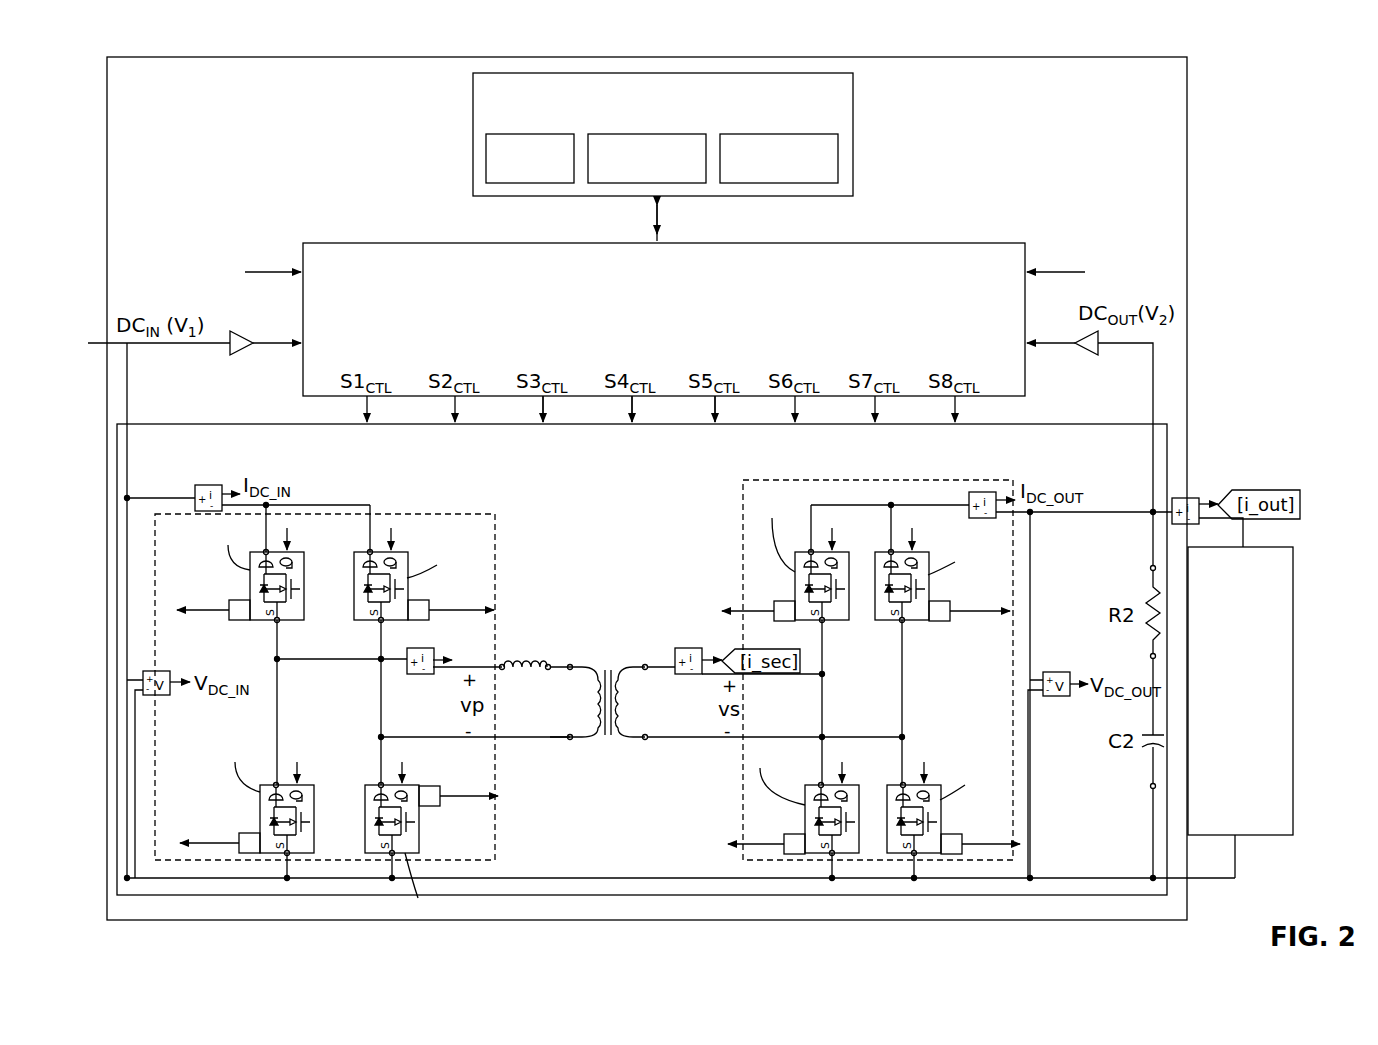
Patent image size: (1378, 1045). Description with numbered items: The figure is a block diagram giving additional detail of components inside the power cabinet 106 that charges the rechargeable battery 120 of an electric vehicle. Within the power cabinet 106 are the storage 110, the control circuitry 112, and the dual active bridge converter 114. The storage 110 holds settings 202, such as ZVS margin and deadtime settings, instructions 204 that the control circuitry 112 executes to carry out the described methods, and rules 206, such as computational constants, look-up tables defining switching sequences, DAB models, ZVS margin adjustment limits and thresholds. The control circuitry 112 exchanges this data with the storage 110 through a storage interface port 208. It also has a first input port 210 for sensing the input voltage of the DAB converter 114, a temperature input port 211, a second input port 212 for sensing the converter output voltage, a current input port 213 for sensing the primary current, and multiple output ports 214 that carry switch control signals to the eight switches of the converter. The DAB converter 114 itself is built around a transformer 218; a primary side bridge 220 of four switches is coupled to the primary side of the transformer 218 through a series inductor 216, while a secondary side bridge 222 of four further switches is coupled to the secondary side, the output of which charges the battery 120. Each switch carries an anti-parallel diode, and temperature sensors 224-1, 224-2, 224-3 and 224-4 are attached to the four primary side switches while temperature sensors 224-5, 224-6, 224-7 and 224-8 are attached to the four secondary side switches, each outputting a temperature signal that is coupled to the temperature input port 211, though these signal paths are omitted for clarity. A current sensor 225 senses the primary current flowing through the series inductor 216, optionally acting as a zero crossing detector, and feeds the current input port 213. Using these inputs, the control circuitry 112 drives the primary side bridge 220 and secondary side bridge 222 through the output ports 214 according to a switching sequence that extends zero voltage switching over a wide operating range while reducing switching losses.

The power cabinet 106 is at (176, 57).
The storage 110 is at (473, 134).
The control circuitry 112 is at (357, 243).
The dual active bridge (DAB) converter 114 is at (228, 424).
The rechargeable battery 120 is at (1270, 835).
The settings 202 is at (549, 134).
The instructions 204 is at (657, 134).
The rules 206 is at (785, 134).
The storage interface port 208 is at (650, 222).
The first input port 210 is at (392, 350).
The temperature input port 211 is at (408, 275).
The second input port 212 is at (920, 335).
The current input port 213 is at (993, 280).
The output ports 214 is at (528, 355).
The series inductor 216 is at (527, 656).
The transformer 218 is at (608, 650).
The primary side bridge 220 is at (425, 514).
The secondary side bridge 222 is at (818, 480).
The temperature sensor 224-1 is at (232, 620).
The temperature sensor 224-2 is at (242, 853).
The temperature sensor 224-3 is at (415, 620).
The temperature sensor 224-4 is at (432, 806).
The temperature sensor 224-5 is at (777, 621).
The temperature sensor 224-6 is at (785, 853).
The temperature sensor 224-7 is at (937, 622).
The temperature sensor 224-8 is at (948, 854).
The current sensor 225 is at (420, 676).